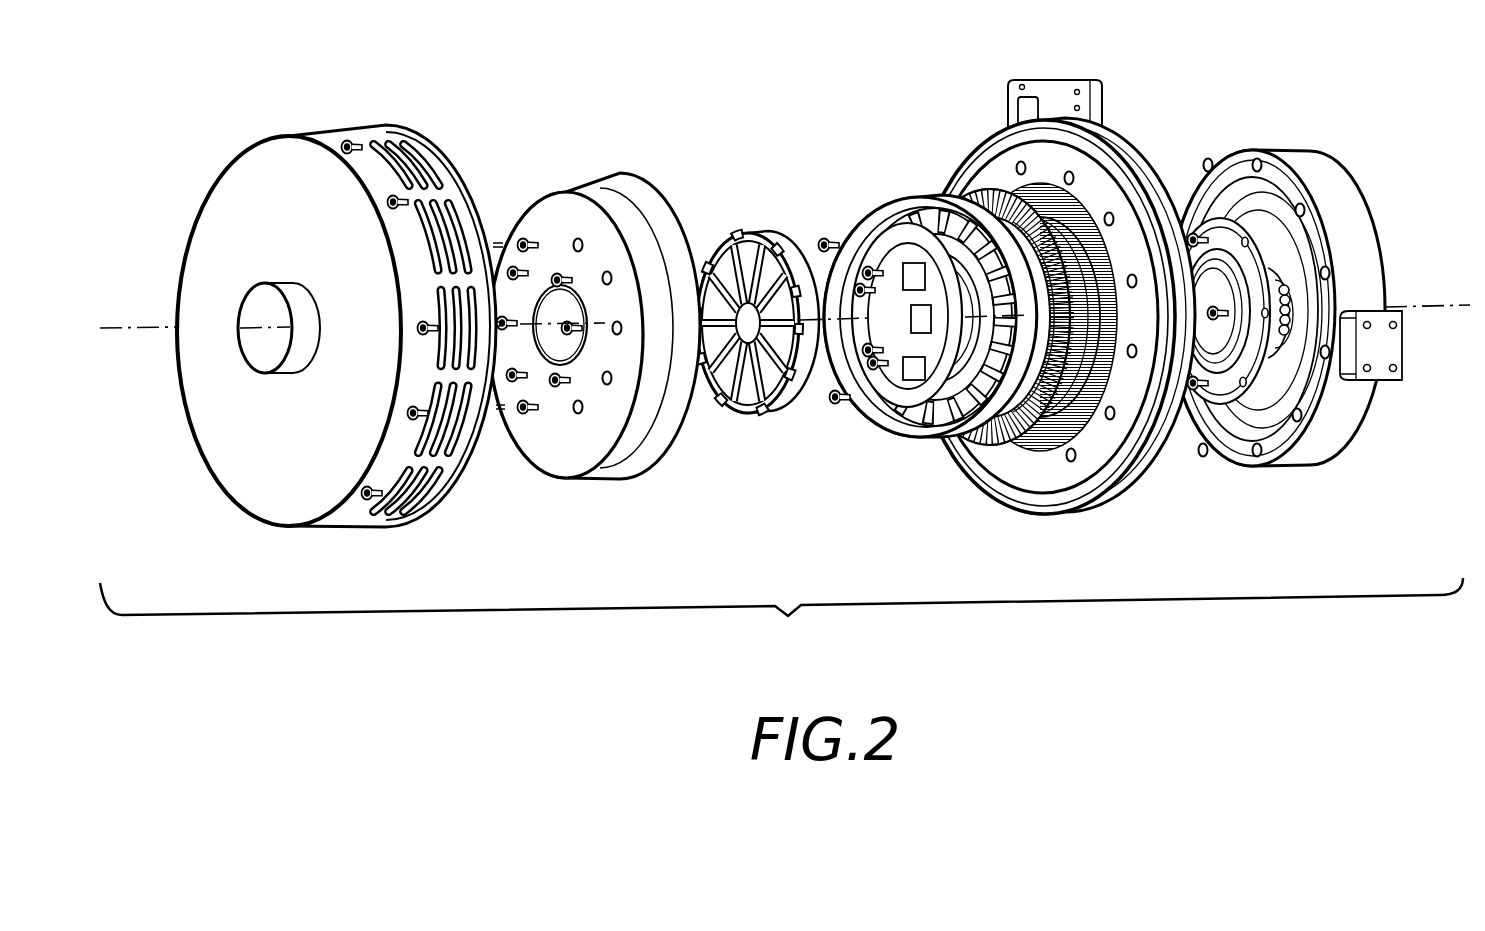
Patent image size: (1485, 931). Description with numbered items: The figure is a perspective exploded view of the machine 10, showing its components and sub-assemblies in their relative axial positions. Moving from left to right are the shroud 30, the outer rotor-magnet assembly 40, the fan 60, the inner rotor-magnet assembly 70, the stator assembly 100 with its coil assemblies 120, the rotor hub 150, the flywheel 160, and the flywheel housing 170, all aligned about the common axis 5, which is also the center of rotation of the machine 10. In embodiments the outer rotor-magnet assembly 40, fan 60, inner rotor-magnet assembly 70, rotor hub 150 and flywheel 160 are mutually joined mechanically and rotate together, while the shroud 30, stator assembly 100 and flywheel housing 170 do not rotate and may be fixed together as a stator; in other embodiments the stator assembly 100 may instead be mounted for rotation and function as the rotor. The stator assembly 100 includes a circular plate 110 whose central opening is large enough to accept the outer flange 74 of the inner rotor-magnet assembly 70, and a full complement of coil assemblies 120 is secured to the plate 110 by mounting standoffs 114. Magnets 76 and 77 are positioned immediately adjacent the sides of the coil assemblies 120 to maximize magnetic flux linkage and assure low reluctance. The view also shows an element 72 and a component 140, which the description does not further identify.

The common axis 5 is at (118, 335).
The machine 10 is at (781, 613).
The shroud 30 is at (424, 142).
The outer rotor-magnet assembly 40 is at (623, 177).
The fan 60 is at (788, 243).
The inner rotor-magnet assembly 70 is at (928, 300).
The stator hub 72 is at (853, 267).
The outer flange 74 is at (893, 194).
The magnet 76 is at (933, 218).
The magnet 77 is at (945, 435).
The stator assembly 100 is at (1127, 475).
The circular plate 110 is at (1073, 500).
The mounting standoffs 114 is at (1063, 457).
The coil assemblies 120 is at (1108, 307).
The mounting bracket 140 is at (1040, 98).
The rotor hub 150 is at (1228, 222).
The flywheel 160 is at (1273, 408).
The flywheel housing 170 is at (1300, 152).